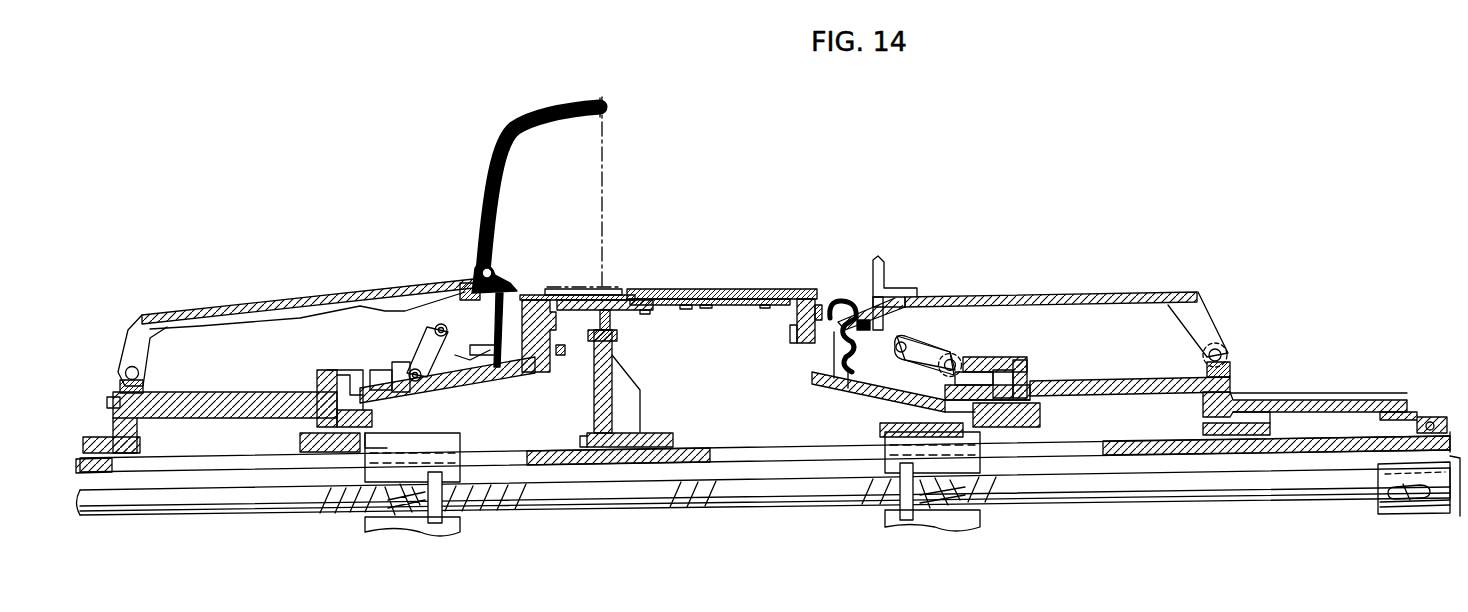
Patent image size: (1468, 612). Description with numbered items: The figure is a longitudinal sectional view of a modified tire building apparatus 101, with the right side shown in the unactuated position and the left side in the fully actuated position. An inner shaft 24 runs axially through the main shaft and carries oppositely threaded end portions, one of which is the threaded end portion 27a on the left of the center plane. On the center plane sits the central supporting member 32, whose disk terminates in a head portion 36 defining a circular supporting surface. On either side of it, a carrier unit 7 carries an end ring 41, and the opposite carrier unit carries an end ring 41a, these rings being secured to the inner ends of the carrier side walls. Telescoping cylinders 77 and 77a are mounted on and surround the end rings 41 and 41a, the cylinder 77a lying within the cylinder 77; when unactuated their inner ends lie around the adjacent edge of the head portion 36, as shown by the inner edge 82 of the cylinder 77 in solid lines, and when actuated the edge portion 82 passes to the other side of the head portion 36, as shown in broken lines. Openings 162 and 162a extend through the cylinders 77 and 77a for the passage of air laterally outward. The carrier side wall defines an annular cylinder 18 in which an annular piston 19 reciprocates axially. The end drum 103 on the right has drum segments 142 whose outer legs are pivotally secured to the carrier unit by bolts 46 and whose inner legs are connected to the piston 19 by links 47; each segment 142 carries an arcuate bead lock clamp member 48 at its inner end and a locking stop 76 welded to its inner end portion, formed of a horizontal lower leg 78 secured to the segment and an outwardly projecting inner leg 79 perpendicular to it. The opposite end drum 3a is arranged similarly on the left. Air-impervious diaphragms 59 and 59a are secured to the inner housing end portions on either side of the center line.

The end drum 3a is at (257, 302).
The carrier unit 7 is at (1226, 384).
The annular cylinder 18 is at (1030, 366).
The annular piston 19 is at (975, 371).
The inner shaft 24 is at (777, 503).
The threaded end portion 27a is at (263, 507).
The central supporting member 32 is at (608, 312).
The head portion 36 is at (645, 308).
The end ring 41 is at (795, 340).
The end ring 41a is at (554, 337).
The bolt 46 is at (1213, 334).
The link 47 is at (922, 352).
The bead lock clamp member 48 is at (862, 336).
The diaphragm 59 is at (862, 360).
The diaphragm 59a is at (493, 342).
The locking stop 76 is at (887, 283).
The telescoping cylinder 77 is at (706, 290).
The telescoping cylinder 77a is at (688, 310).
The lower leg 78 is at (920, 297).
The inner leg 79 is at (882, 262).
The inner edge 82 is at (553, 292).
The tire building apparatus 101 is at (1222, 299).
The end drum 103 is at (1046, 297).
The drum segment 142 is at (1119, 297).
The opening 162 is at (670, 289).
The opening 162a is at (762, 308).